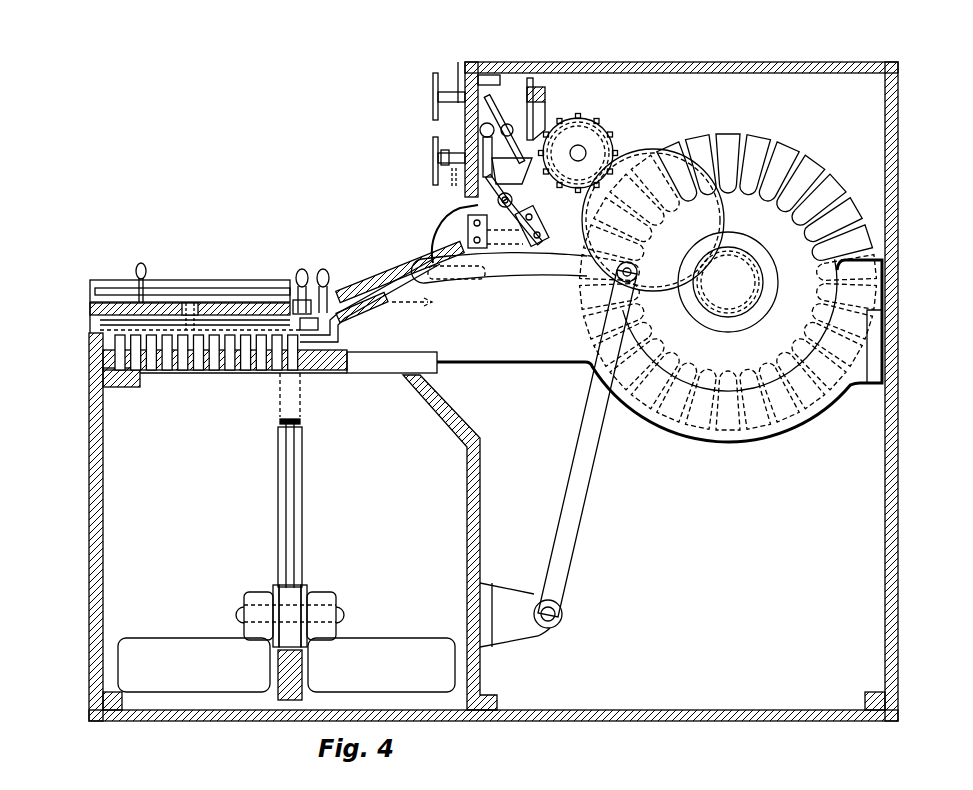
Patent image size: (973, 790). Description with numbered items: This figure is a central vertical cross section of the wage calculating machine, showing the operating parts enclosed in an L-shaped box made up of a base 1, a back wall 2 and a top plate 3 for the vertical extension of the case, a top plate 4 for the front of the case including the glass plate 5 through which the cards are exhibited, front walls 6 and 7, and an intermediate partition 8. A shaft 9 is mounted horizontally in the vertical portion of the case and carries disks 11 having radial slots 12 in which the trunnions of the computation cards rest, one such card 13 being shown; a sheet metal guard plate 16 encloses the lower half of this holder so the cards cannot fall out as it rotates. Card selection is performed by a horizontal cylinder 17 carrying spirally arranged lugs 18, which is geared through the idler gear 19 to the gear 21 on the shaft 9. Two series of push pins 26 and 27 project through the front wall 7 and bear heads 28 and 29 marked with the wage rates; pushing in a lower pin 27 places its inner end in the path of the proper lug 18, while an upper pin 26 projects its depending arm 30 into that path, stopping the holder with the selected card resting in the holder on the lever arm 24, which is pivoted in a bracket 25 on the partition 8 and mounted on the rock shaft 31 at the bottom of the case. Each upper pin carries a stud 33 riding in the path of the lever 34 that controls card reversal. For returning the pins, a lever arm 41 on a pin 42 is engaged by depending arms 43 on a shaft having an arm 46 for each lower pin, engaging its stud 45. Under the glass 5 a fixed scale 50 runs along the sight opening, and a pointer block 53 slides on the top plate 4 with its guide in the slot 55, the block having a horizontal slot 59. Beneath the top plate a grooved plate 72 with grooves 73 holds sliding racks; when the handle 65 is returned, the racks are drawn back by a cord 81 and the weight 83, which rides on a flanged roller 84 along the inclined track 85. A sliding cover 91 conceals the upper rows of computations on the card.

The base 1 is at (695, 722).
The back wall 2 is at (898, 470).
The top plate 3 is at (603, 68).
The top plate 4 is at (90, 305).
The glass plate 5 is at (385, 262).
The front wall 6 is at (89, 517).
The front wall 7 is at (465, 122).
The intermediate partition 8 is at (467, 487).
The shaft 9 is at (752, 268).
The disks 11 is at (730, 300).
The slots 12 is at (762, 142).
The card 13 is at (583, 278).
The guard plate 16 is at (758, 440).
The cylinder 17 is at (600, 140).
The lugs 18 is at (582, 118).
The idler gear 19 is at (640, 152).
The gear 21 is at (733, 246).
The lever arm 24 is at (600, 470).
The bracket 25 is at (505, 595).
The push pins 26 is at (458, 65).
The push pins 27 is at (452, 186).
The heads 28 is at (433, 93).
The heads 29 is at (433, 165).
The depending arm 30 is at (536, 120).
The rock shaft 31 is at (562, 613).
The stud 33 is at (487, 95).
The lever 34 is at (496, 94).
The lever arm 41 is at (505, 182).
The pin 42 is at (513, 200).
The depending arms 43 is at (447, 143).
The stud 45 is at (441, 157).
The arm 46 is at (495, 143).
The fixed scale 50 is at (370, 311).
The block 53 is at (270, 284).
The slot 55 is at (192, 302).
The horizontal slot 59 is at (112, 287).
The handle 65 is at (145, 266).
The grooved plate 72 is at (195, 360).
The grooves 73 is at (218, 358).
The cord 81 is at (290, 542).
The weight 83 is at (170, 642).
The flanged roller 84 is at (306, 600).
The inclined track 85 is at (302, 500).
The sliding cover 91 is at (433, 224).